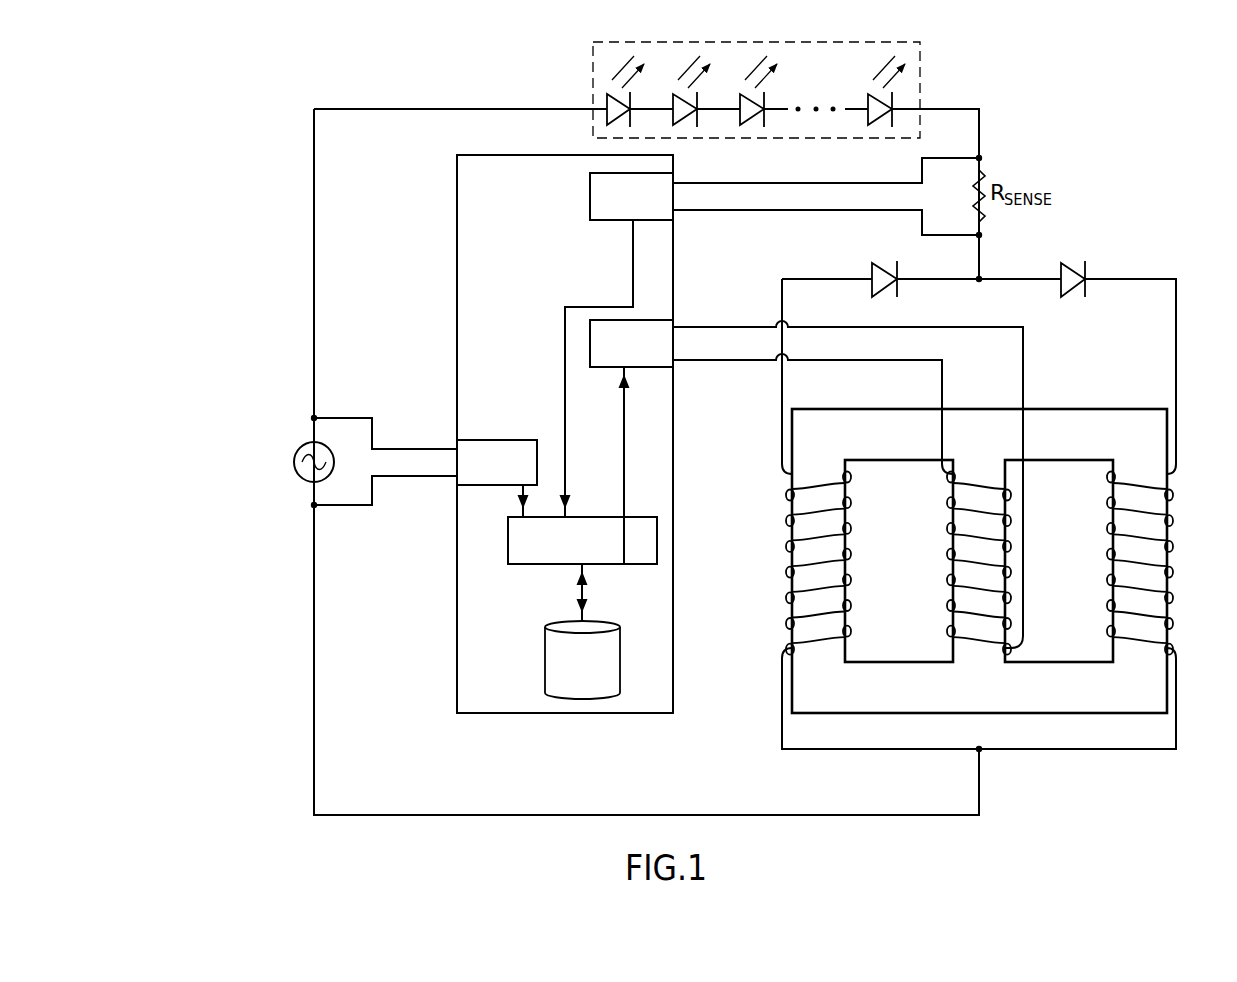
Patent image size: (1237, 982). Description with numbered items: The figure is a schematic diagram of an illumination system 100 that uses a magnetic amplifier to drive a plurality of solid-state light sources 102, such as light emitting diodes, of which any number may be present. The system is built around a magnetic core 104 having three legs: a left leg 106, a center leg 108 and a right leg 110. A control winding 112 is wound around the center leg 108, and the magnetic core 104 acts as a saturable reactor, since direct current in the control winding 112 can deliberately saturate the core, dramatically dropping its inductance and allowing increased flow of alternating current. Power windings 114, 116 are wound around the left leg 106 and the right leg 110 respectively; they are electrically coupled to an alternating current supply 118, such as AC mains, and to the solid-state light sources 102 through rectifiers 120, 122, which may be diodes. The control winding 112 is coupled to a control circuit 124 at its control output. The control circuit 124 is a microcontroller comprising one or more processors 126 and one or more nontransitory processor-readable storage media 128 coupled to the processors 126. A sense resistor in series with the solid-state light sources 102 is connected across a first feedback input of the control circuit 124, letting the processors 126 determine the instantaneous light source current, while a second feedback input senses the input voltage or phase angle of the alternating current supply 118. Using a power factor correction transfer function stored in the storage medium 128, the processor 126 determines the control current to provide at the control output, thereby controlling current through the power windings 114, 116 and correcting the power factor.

The illumination system 100 is at (1109, 104).
The solid-state light sources 102 is at (921, 79).
The magnetic core 104 is at (1085, 408).
The left leg 106 is at (812, 530).
The center leg 108 is at (970, 549).
The right leg 110 is at (1143, 527).
The control winding 112 is at (973, 618).
The power winding 114 is at (812, 620).
The power winding 116 is at (1147, 615).
The alternating current supply 118 is at (306, 480).
The rectifier 120 is at (873, 272).
The rectifier 122 is at (1070, 268).
The control circuit 124 is at (457, 214).
The processor 126 is at (545, 566).
The nontransitory processor-readable storage medium 128 is at (545, 645).